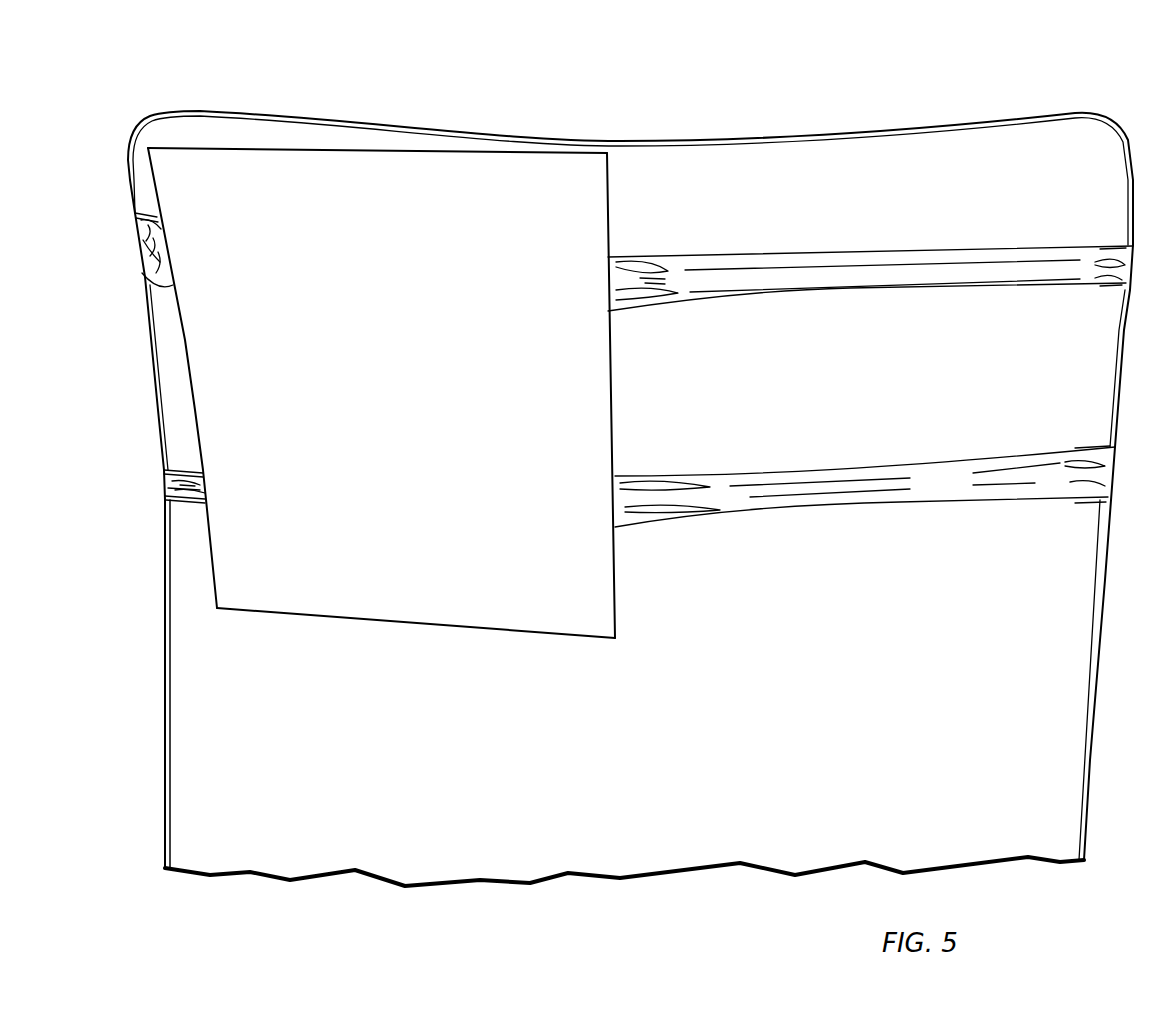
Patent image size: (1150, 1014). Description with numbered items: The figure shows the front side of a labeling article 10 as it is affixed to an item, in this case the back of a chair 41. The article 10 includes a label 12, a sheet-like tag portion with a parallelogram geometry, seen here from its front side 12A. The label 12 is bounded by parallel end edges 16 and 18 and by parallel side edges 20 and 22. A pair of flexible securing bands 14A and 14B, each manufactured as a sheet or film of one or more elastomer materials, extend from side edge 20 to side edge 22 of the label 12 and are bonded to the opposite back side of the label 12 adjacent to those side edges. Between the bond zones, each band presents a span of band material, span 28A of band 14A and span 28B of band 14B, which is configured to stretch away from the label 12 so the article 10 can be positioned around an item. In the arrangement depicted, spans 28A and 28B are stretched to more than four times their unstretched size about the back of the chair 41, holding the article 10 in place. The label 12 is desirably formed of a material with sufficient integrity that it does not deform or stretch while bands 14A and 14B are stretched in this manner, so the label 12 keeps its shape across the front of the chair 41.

The article 10 is at (592, 463).
The label 12 is at (341, 393).
The front side 12A is at (381, 393).
The band 14A is at (120, 225).
The band 14B is at (145, 475).
The end edge 16 is at (362, 153).
The end edge 18 is at (274, 612).
The side edge 20 is at (613, 443).
The side edge 22 is at (195, 375).
The span 28A is at (140, 255).
The span 28B is at (160, 488).
The chair 41 is at (160, 710).